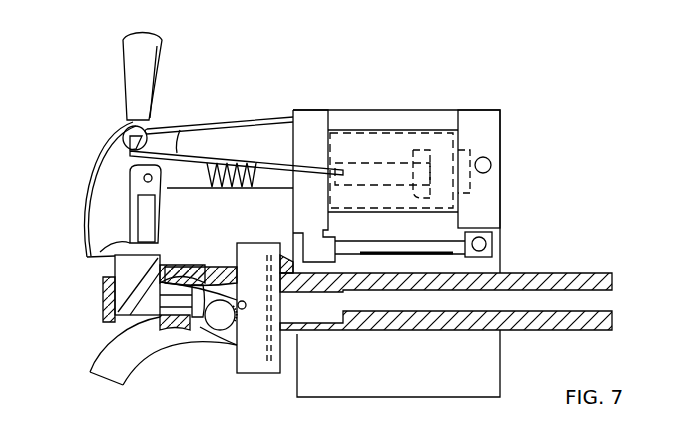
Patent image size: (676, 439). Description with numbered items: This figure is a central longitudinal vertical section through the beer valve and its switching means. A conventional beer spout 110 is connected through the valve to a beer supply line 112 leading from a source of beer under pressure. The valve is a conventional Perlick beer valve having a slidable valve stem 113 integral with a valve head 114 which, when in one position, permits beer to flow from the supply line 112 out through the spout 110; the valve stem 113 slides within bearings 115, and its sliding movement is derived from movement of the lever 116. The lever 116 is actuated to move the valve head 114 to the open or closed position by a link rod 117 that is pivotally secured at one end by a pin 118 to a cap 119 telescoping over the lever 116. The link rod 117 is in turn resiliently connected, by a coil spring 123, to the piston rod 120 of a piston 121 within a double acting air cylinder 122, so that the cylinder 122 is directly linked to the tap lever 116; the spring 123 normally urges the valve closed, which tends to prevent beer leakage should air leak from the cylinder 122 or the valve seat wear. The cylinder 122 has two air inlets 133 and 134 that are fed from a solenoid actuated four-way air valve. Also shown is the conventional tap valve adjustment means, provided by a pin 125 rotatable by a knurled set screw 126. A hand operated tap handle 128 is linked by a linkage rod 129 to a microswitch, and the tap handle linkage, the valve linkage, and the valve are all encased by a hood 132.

The beer spout 110 is at (113, 372).
The beer supply line 112 is at (611, 272).
The valve stem 113 is at (178, 306).
The valve head 114 is at (205, 292).
The bearings 115 is at (130, 301).
The lever 116 is at (110, 258).
The link rod 117 is at (186, 178).
The pin 118 is at (145, 176).
The cap 119 is at (132, 212).
The piston rod 120 is at (270, 180).
The piston 121 is at (425, 150).
The double acting air cylinder 122 is at (385, 138).
The coil spring 123 is at (222, 180).
The pin 125 is at (244, 307).
The knurled set screw 126 is at (221, 331).
The tap handle 128 is at (149, 66).
The linkage rod 129 is at (181, 130).
The hood 132 is at (273, 118).
The air inlet 133 is at (491, 164).
The air inlet 134 is at (482, 244).